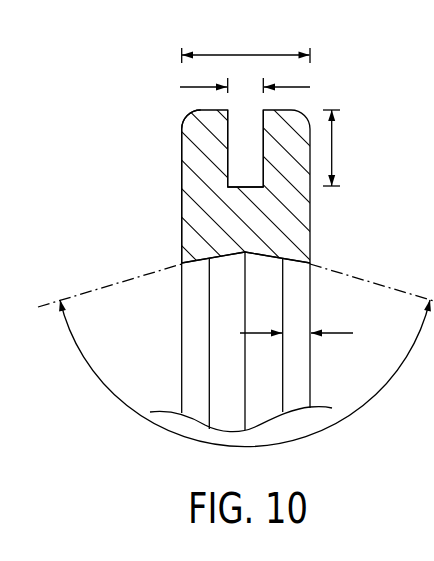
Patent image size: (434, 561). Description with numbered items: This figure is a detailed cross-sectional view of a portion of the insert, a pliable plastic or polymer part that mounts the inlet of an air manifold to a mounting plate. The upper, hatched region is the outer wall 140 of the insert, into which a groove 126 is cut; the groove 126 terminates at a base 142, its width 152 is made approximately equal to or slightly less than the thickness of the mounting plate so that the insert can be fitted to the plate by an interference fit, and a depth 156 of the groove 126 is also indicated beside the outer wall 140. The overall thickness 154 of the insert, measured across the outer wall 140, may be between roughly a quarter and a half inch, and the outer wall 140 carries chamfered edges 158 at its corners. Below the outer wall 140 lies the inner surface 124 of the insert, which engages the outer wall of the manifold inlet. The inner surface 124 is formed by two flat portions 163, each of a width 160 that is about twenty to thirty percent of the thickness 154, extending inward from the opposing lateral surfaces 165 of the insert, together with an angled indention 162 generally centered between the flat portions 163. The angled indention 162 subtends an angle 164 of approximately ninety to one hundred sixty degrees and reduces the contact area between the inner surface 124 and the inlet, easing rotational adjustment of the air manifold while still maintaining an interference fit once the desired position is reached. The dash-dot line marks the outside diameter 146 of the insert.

The inner surface 124 is at (228, 268).
The groove 126 is at (247, 101).
The outer wall 140 is at (281, 109).
The base 142 is at (237, 189).
The outside diameter 146 is at (217, 285).
The width 152 is at (297, 87).
The thickness 154 is at (244, 55).
The slot depth 156 is at (332, 147).
The chamfered edges 158 is at (180, 118).
The width 160 is at (337, 336).
The angled indention 162 is at (266, 256).
The flat portions 163 is at (300, 261).
The angle 164 is at (358, 410).
The lateral surfaces 165 is at (180, 197).